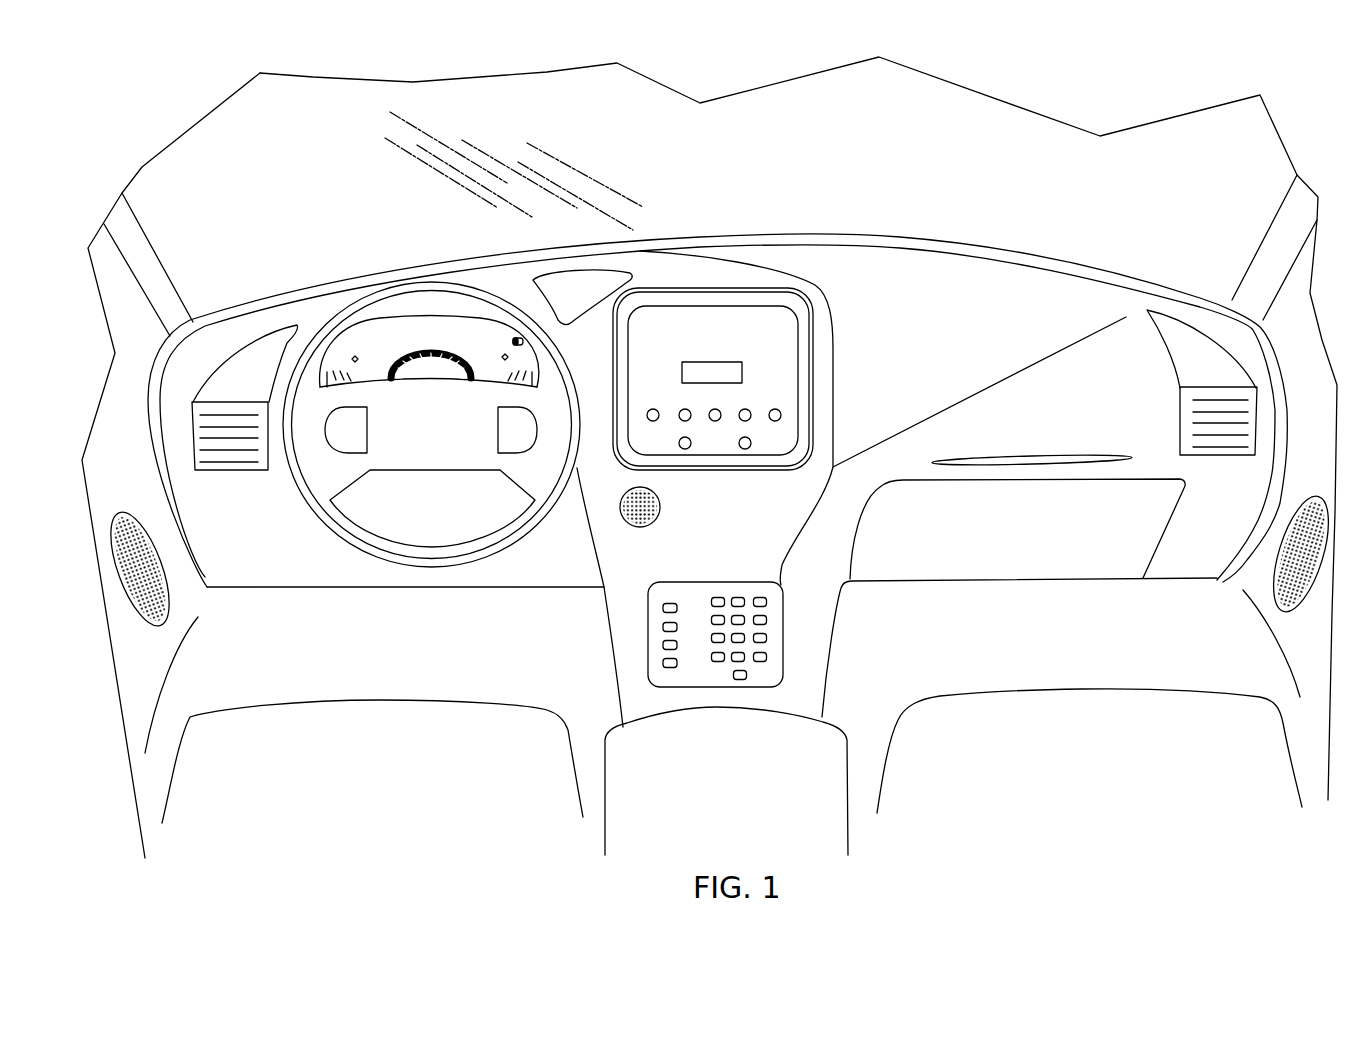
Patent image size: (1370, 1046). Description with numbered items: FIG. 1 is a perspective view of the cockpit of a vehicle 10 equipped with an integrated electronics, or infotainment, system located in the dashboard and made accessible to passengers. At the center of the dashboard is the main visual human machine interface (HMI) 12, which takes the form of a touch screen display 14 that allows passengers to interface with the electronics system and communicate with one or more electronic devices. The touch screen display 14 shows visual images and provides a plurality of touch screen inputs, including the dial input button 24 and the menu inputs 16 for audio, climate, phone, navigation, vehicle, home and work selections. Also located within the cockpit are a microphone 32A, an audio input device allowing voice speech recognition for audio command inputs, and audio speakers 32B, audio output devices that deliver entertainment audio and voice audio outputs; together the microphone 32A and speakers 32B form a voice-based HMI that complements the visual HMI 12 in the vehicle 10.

The vehicle 10 is at (1086, 116).
The main visual human machine interface (HMI) 12 is at (813, 353).
The touch screen display 14 is at (730, 320).
The menu inputs 16 is at (775, 421).
The dial input button 24 is at (743, 370).
The microphone 32A is at (660, 508).
The audio speakers 32B is at (167, 593).